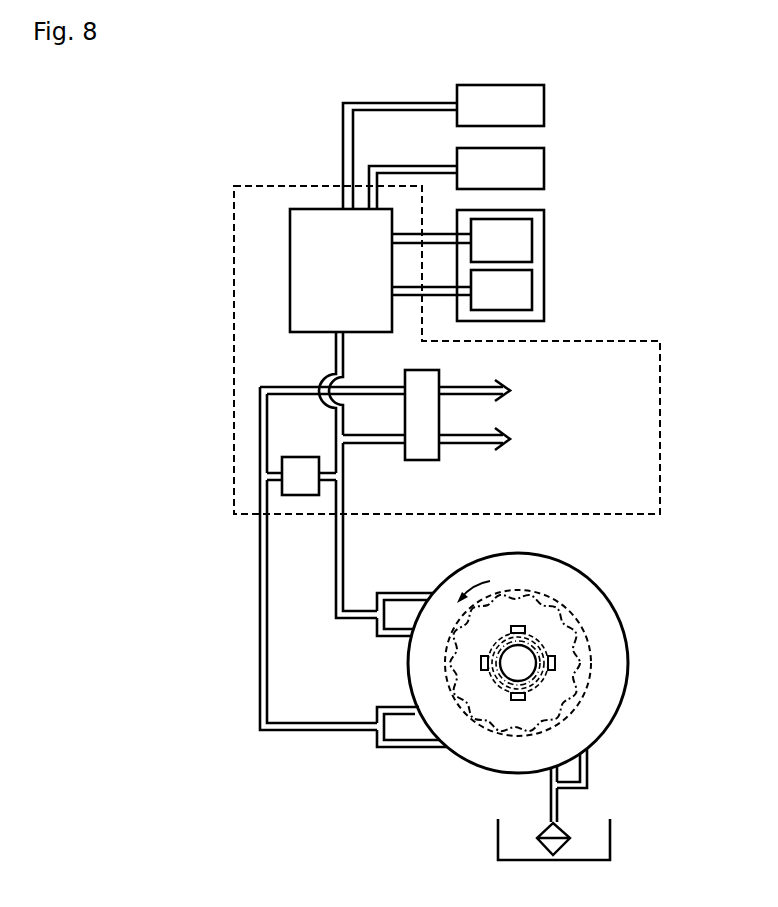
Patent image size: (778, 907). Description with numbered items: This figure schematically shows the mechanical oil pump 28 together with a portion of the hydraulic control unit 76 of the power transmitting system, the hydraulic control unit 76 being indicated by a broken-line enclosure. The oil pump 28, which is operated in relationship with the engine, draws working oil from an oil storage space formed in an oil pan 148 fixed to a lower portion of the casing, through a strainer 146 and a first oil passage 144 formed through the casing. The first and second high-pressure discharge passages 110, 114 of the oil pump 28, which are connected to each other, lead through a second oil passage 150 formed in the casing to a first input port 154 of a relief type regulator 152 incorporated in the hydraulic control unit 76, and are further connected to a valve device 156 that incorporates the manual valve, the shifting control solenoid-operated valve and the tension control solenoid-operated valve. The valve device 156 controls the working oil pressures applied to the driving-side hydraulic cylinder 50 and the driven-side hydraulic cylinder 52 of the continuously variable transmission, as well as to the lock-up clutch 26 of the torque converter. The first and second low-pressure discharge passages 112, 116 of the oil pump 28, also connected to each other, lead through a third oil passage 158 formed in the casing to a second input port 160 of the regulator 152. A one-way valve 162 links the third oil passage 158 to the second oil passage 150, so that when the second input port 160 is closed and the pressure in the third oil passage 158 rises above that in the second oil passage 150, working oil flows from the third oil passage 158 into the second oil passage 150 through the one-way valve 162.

The hydraulic control unit 76 is at (253, 185).
The valve device 156 is at (300, 217).
The driving-side hydraulic cylinder 50 is at (538, 94).
The driven-side hydraulic cylinder 52 is at (538, 155).
The lock-up clutch 26 is at (538, 222).
The second input port 160 is at (404, 383).
The first input port 154 is at (404, 437).
The one-way valve 162 is at (300, 463).
The regulator 152 is at (427, 452).
The third oil passage 158 is at (259, 582).
The second oil passage 150 is at (336, 582).
The first high-pressure discharge passage 110 is at (408, 593).
The second high-pressure discharge passage 114 is at (395, 637).
The first low-pressure discharge passage 112 is at (397, 707).
The second low-pressure discharge passage 116 is at (407, 748).
The oil pump 28 is at (608, 594).
The first oil passage 144 is at (559, 806).
The strainer 146 is at (547, 832).
The oil pan 148 is at (612, 838).